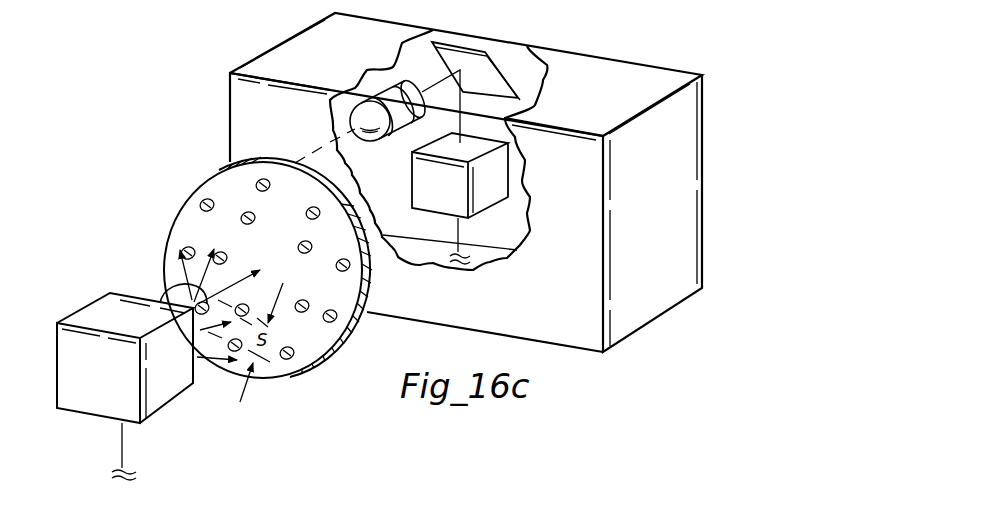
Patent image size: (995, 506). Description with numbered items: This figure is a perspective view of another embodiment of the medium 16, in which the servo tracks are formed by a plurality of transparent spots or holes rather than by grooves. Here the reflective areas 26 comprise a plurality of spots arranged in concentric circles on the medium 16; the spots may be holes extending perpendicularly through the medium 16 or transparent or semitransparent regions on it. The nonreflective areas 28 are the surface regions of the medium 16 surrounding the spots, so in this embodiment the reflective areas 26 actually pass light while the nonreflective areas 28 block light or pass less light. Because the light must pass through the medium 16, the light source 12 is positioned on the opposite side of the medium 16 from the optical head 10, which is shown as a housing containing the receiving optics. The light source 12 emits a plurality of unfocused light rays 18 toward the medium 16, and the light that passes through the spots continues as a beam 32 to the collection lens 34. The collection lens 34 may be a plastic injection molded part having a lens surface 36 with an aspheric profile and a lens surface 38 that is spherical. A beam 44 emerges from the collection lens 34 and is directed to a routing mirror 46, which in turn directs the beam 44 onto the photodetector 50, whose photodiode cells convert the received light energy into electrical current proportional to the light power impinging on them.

The optical head 10 is at (637, 60).
The light source 12 is at (108, 391).
The medium 16 is at (212, 172).
The unfocused light rays 18 is at (165, 293).
The reflective areas 26 is at (258, 190).
The nonreflective areas 28 is at (296, 232).
The reflected beam 32 is at (315, 150).
The collection lens 34 is at (368, 101).
The lens surface 36 is at (366, 142).
The lens surface 38 is at (424, 86).
The beam 44 is at (440, 92).
The routing mirror 46 is at (496, 52).
The photodetector 50 is at (450, 196).